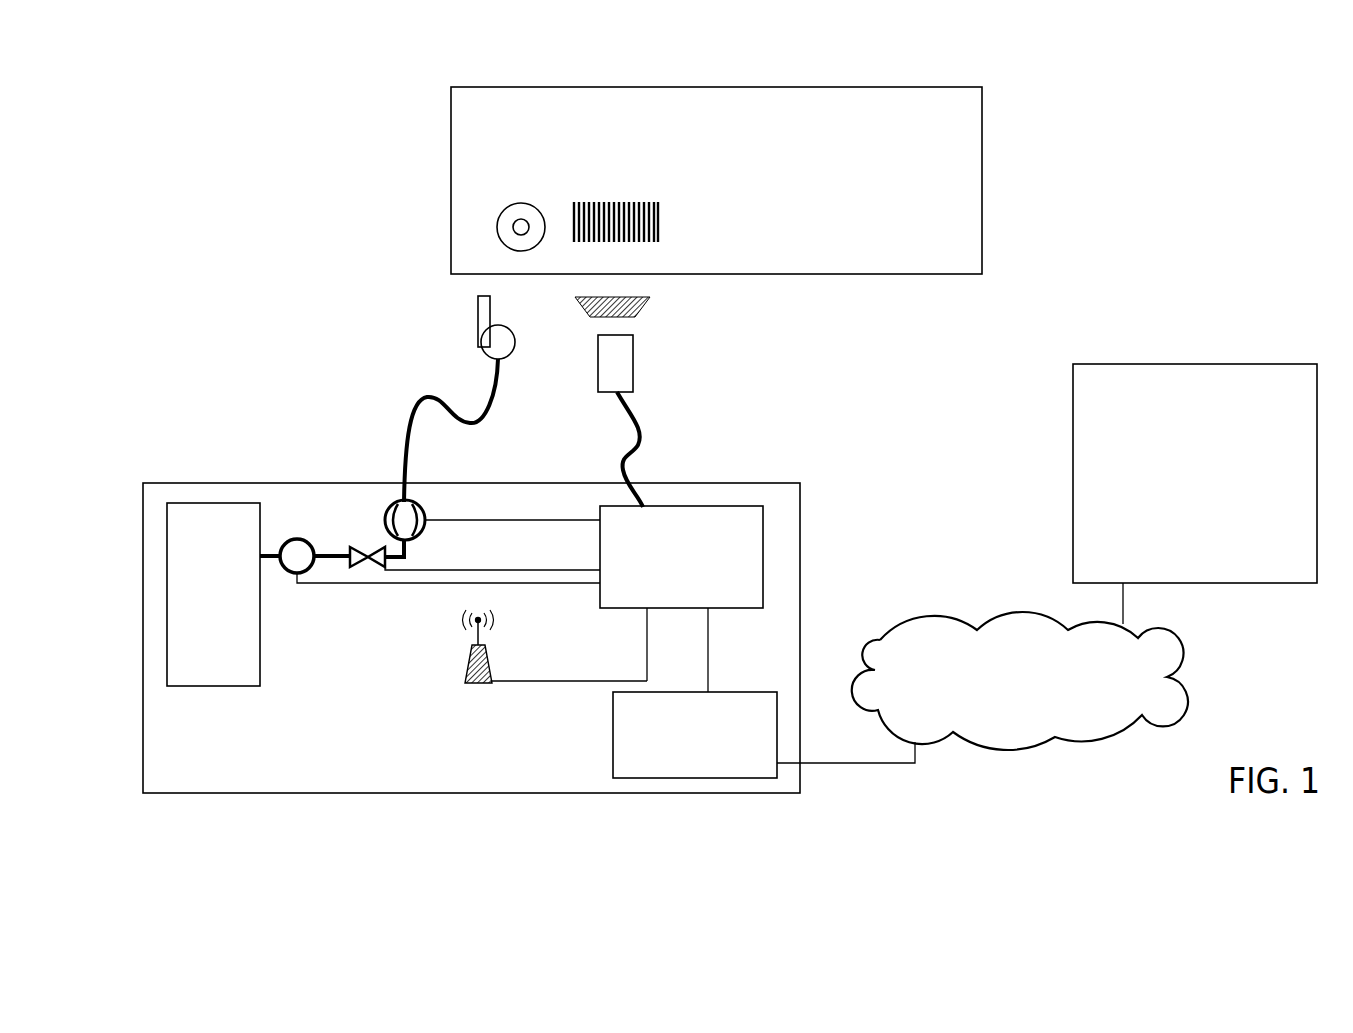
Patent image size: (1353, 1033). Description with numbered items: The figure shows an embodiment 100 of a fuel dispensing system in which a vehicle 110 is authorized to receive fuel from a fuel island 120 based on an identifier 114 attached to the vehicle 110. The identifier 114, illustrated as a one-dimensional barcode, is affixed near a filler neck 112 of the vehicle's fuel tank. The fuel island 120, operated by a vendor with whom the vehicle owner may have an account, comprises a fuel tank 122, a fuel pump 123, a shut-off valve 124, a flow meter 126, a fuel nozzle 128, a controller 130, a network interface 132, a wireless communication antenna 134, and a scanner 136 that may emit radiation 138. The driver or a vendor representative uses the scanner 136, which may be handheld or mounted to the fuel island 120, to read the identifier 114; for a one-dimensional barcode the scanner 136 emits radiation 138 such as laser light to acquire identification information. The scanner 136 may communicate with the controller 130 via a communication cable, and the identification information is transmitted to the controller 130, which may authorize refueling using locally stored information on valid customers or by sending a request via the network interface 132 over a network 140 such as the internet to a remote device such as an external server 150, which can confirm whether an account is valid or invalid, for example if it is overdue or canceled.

The embodiment 100 is at (1083, 128).
The vehicle 110 is at (716, 180).
The filler neck 112 is at (513, 203).
The identifier 114 is at (658, 200).
The fuel island 120 is at (471, 638).
The fuel tank 122 is at (223, 594).
The fuel pump 123 is at (292, 574).
The shut-off valve 124 is at (351, 547).
The flow meter 126 is at (386, 512).
The fuel nozzle 128 is at (478, 302).
The controller 130 is at (681, 599).
The network interface 132 is at (764, 735).
The wireless communication antenna 134 is at (472, 687).
The scanner 136 is at (633, 365).
The radiation 138 is at (650, 312).
The network 140 is at (1041, 693).
The external server 150 is at (1195, 494).